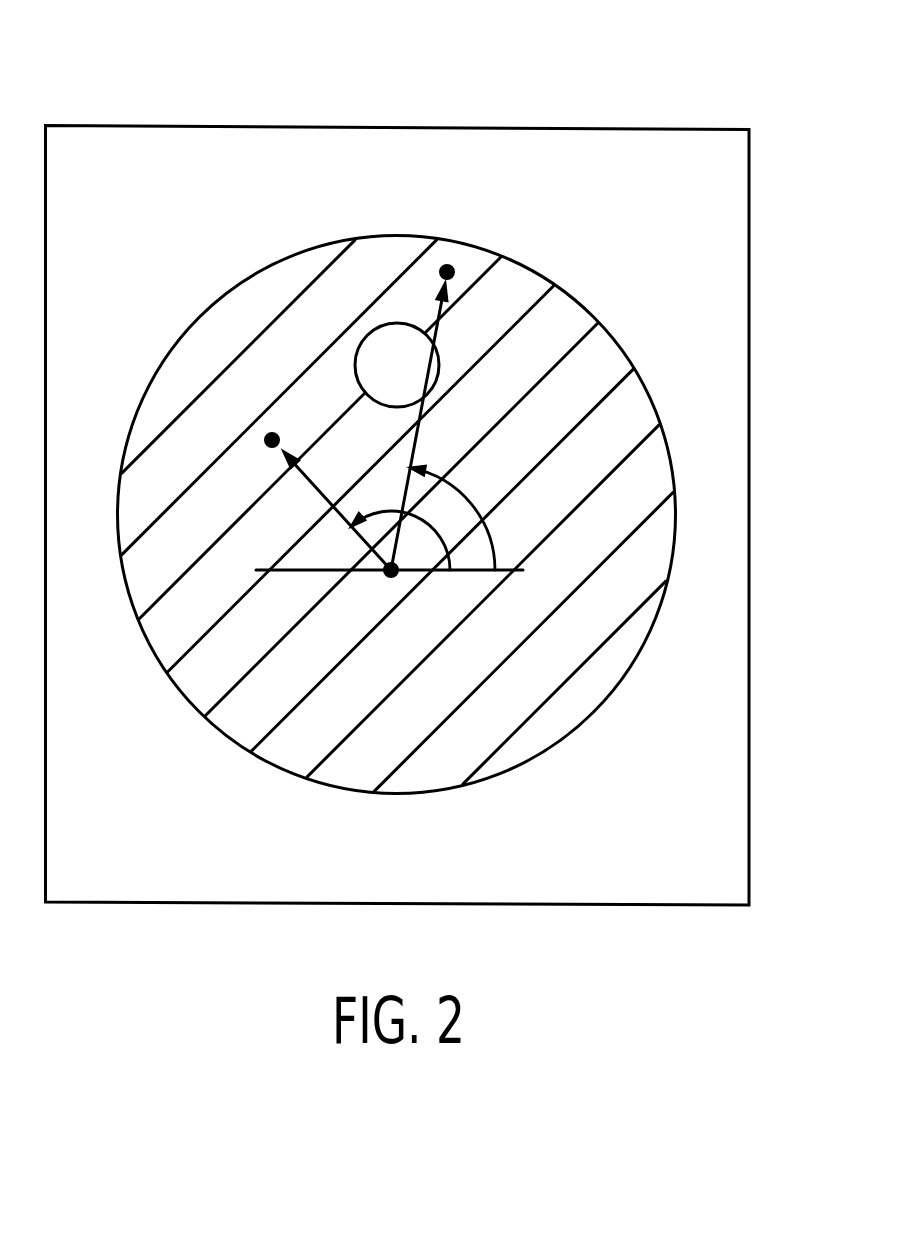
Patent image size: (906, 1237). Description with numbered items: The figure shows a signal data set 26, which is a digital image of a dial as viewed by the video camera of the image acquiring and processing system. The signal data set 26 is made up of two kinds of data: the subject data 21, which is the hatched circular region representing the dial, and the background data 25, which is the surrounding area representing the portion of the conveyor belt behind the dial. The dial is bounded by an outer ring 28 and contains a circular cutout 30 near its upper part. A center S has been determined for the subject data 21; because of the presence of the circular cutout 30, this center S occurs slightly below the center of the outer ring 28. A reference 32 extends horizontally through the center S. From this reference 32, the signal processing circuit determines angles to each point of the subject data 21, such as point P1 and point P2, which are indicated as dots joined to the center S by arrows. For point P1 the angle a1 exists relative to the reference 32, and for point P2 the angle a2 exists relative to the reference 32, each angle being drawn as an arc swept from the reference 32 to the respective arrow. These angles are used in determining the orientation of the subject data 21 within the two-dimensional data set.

The subject data 21 is at (658, 465).
The background data 25 is at (730, 218).
The signal data set 26 is at (616, 60).
The outer ring 28 is at (603, 707).
The circular cutout 30 is at (389, 322).
The reference 32 is at (515, 572).
The center S is at (390, 587).
The point P1 is at (329, 490).
The point P2 is at (439, 418).
The angle a1 is at (411, 540).
The angle a2 is at (460, 518).